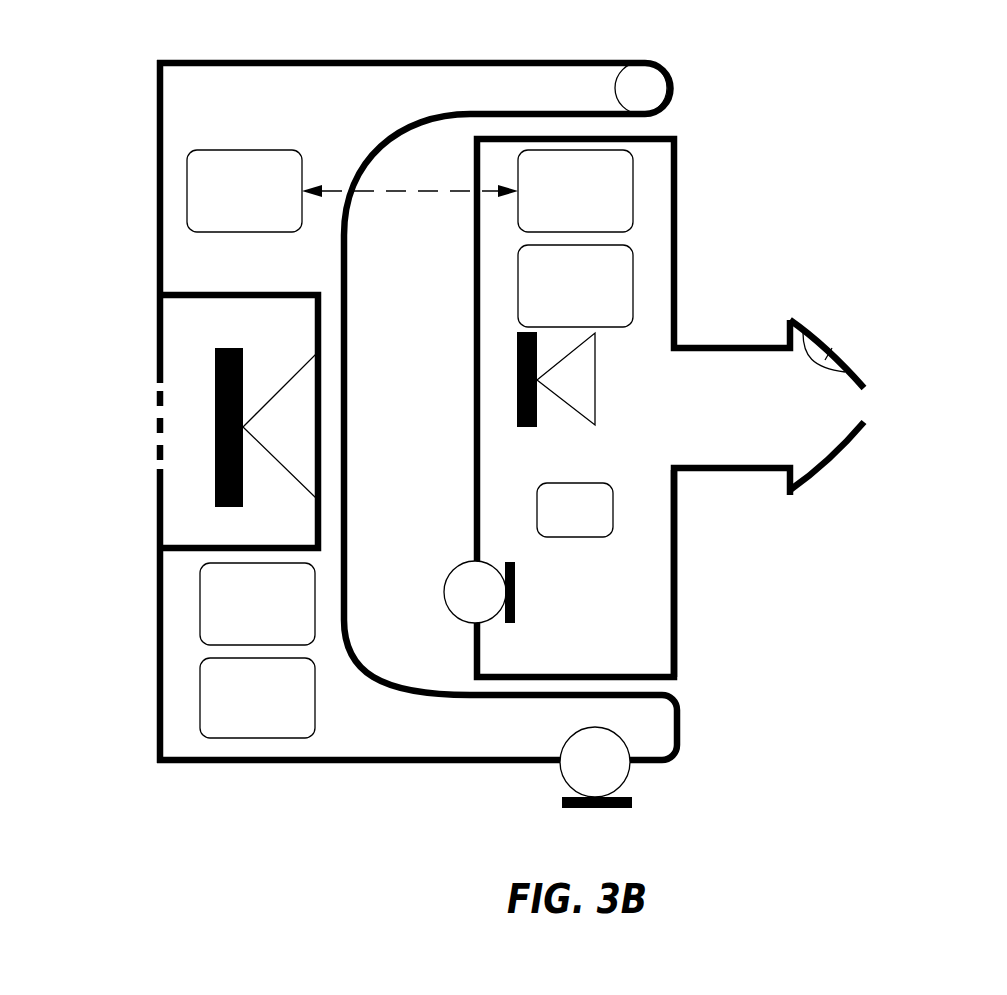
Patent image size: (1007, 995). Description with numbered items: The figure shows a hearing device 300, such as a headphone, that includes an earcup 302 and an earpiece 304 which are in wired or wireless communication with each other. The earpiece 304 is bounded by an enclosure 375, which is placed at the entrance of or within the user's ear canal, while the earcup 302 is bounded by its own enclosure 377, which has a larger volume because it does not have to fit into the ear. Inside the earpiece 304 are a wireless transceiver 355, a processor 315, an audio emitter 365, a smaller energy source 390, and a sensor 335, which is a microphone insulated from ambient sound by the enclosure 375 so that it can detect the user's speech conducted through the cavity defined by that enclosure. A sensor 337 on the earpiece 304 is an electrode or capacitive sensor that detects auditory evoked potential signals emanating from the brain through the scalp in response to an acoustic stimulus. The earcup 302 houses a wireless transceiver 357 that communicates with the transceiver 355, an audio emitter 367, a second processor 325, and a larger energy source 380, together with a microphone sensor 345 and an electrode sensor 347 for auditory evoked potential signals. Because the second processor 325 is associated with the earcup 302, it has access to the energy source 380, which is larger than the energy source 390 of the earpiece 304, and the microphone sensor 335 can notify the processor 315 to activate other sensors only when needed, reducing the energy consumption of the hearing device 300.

The hearing device 300 is at (868, 206).
The earcup 302 is at (158, 62).
The earpiece 304 is at (712, 131).
The processor 315 is at (561, 310).
The processor 325 is at (243, 630).
The sensor 335 is at (461, 601).
The sensor 337 is at (866, 328).
The sensor 345 is at (581, 771).
The sensor 347 is at (702, 66).
The transceiver 355 is at (561, 225).
The transceiver 357 is at (230, 225).
The audio emitter 365 is at (557, 391).
The audio emitter 367 is at (267, 438).
The enclosure 375 is at (712, 632).
The enclosure 377 is at (158, 752).
The energy source 380 is at (243, 734).
The energy source 390 is at (561, 520).